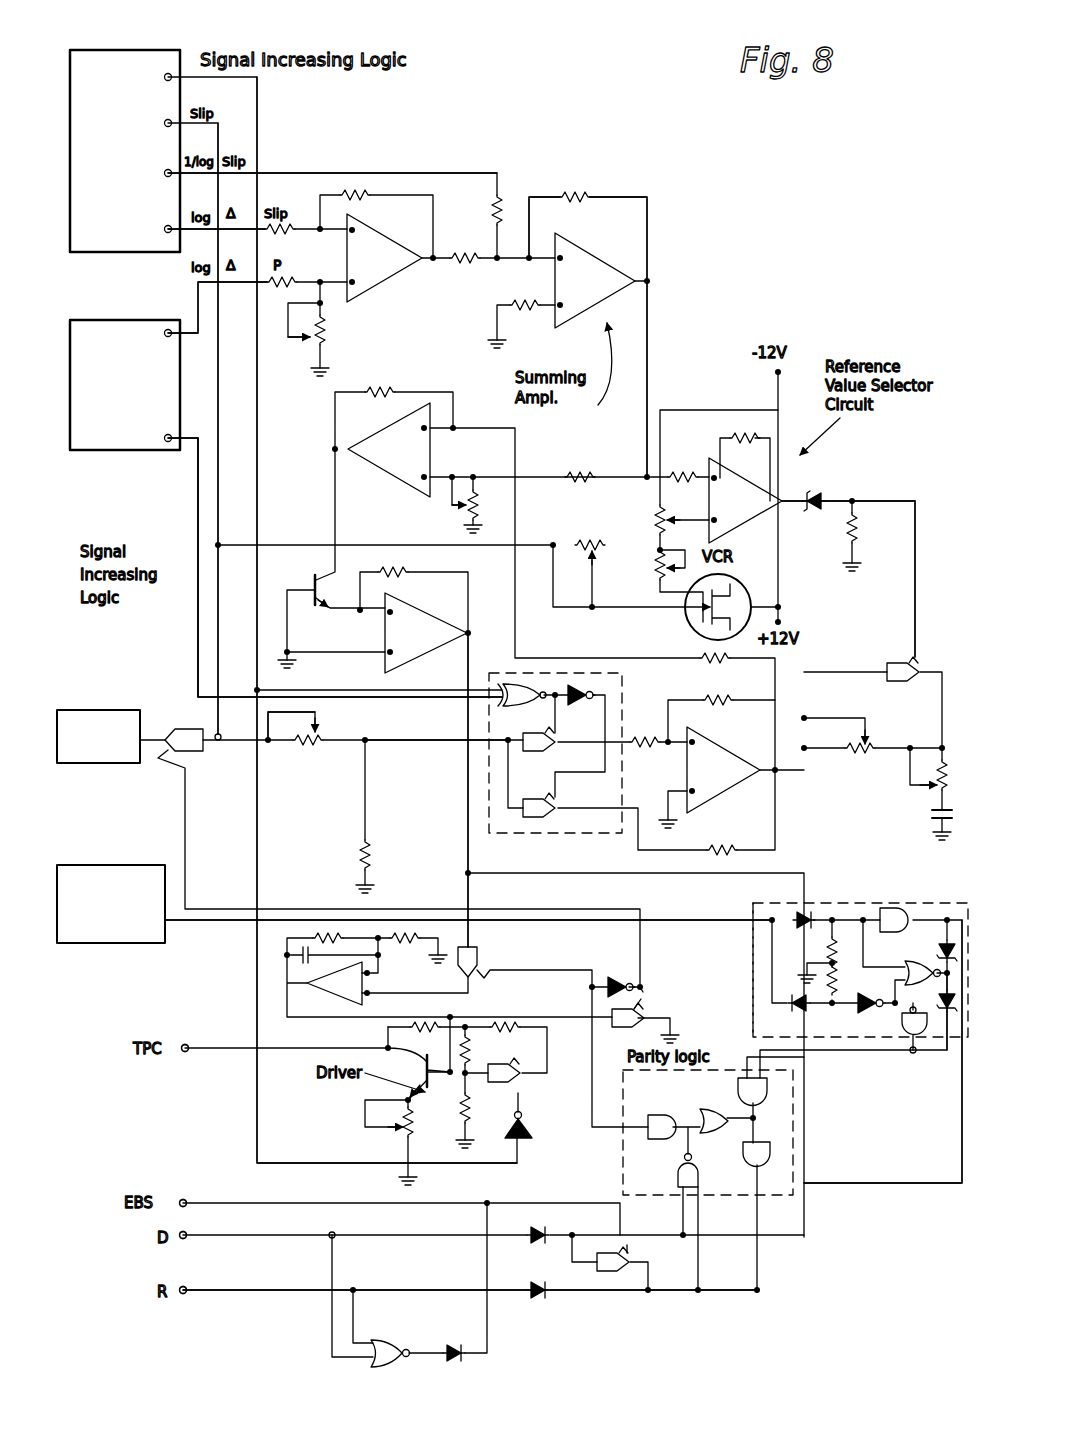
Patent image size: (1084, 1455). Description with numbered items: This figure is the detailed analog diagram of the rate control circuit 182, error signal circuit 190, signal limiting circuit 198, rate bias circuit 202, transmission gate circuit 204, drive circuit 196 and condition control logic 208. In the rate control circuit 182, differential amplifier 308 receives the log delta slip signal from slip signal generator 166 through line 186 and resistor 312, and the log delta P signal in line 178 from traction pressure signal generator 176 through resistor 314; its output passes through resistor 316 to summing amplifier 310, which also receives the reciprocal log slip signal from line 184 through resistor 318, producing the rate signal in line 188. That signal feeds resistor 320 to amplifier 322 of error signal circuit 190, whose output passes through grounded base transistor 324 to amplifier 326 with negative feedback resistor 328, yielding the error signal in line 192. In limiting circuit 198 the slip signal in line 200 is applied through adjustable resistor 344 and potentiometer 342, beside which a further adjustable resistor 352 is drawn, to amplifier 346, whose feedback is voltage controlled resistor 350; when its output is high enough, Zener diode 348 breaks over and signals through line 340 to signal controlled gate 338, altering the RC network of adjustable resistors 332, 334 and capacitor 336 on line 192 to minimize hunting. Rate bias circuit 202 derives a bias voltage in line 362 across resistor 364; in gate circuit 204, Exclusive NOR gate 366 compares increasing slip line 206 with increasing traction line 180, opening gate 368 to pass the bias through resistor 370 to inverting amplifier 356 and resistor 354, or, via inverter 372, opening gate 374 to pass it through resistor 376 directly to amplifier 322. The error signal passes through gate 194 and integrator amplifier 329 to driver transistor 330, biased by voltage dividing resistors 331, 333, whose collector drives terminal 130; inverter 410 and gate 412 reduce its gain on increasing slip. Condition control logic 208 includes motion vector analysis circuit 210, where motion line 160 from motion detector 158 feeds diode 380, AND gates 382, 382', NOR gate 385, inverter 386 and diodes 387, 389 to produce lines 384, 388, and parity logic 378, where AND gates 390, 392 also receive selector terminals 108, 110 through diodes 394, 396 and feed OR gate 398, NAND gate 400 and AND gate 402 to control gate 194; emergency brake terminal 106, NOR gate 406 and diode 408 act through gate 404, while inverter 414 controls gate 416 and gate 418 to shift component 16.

The slip signal generator circuit 166 is at (142, 51).
The traction pressure signal generator 176 is at (110, 452).
The shift component 16 is at (95, 764).
The motion detector circuit 158 is at (133, 868).
The increasing slip logic line 206 is at (258, 132).
The resistor 312 is at (292, 222).
The resistor 314 is at (278, 292).
The slip signal line 184 is at (355, 173).
The log delta slip signal line 186 is at (212, 235).
The log delta P signal line 178 is at (198, 303).
The differential amplifier 308 is at (380, 290).
The resistor 316 is at (462, 268).
The resistor 318 is at (495, 215).
The rate control circuit 182 is at (530, 182).
The summing amplifier 310 is at (612, 268).
The rate signal line 188 is at (647, 336).
The slip signal line 200 is at (220, 452).
The error signal circuit 190 is at (322, 516).
The increasing traction pressure logic line 180 is at (198, 655).
The operational amplifier 322 is at (392, 470).
The resistor 320 is at (582, 470).
The grounded base transistor 324 is at (316, 590).
The negative feedback resistor 328 is at (408, 573).
The amplifier 326 is at (445, 645).
The potentiometer 342 is at (655, 520).
The potentiometer 352 is at (660, 562).
The adjustable resistor 344 is at (582, 560).
The voltage controlled resistor 350 is at (690, 627).
The amplifier 346 is at (760, 512).
The Zener diode 348 is at (822, 497).
The signal limiting circuit 198 is at (890, 496).
The logic signal line 340 is at (917, 547).
The signal controlled gate 338 is at (895, 668).
The adjustable resistor 332 is at (851, 752).
The adjustable resistor 334 is at (934, 790).
The capacitor 336 is at (928, 816).
The transmission control gate circuit 204 is at (505, 840).
The Exclusive NOR gate 366 is at (500, 692).
The inverter 372 is at (584, 687).
The signal controlled gate 368 is at (548, 748).
The signal controlled gate 374 is at (545, 820).
The resistor 370 is at (642, 737).
The resistor 354 is at (728, 668).
The signal inverting amplifier 356 is at (720, 790).
The resistor 376 is at (720, 856).
The error signal line 192 is at (467, 853).
The bias voltage line 362 is at (410, 745).
The resistor 364 is at (372, 848).
The rate bias circuit 202 is at (292, 752).
The gate 418 is at (190, 752).
The motion signal line 160 is at (222, 922).
The integrator amplifier 329 is at (342, 995).
The gate 194 is at (478, 957).
The inverter 414 is at (618, 978).
The gate 416 is at (632, 1010).
The signal controlled gate 412 is at (515, 1068).
The voltage dividing resistor 331 is at (472, 1045).
The voltage dividing resistor 333 is at (478, 1120).
The inverter 410 is at (525, 1126).
The driver transistor 330 is at (428, 1097).
The drive circuit 196 is at (360, 1094).
The terminal 130 is at (190, 1055).
The emergency brake switch terminal 106 is at (188, 1197).
The drive ratio selector terminal 108 is at (188, 1240).
The drive ratio selector terminal 110 is at (188, 1295).
The diode 396 is at (527, 1240).
The diode 394 is at (540, 1298).
The signal controlled gate 404 is at (612, 1272).
The NOR gate 406 is at (390, 1344).
The diode 408 is at (457, 1365).
The AND gate 402 is at (655, 1132).
The OR gate 398 is at (708, 1115).
The NAND gate 400 is at (690, 1172).
The parity logic section 378 is at (790, 1202).
The AND gate 392 is at (763, 1092).
The AND gate 390 is at (770, 1152).
The diode 380 is at (760, 908).
The motion vector analysis circuit 210 is at (752, 968).
The AND gate 382 is at (821, 887).
The NOR gate 385 is at (893, 910).
The diode 387 is at (945, 940).
The inverter 386 is at (866, 1012).
The AND gate 382' is at (853, 1051).
The motion vector signal line 388 is at (905, 1025).
The diode 389 is at (950, 1045).
The motion vector signal line 384 is at (902, 1188).
The condition control logic 208 is at (770, 1265).